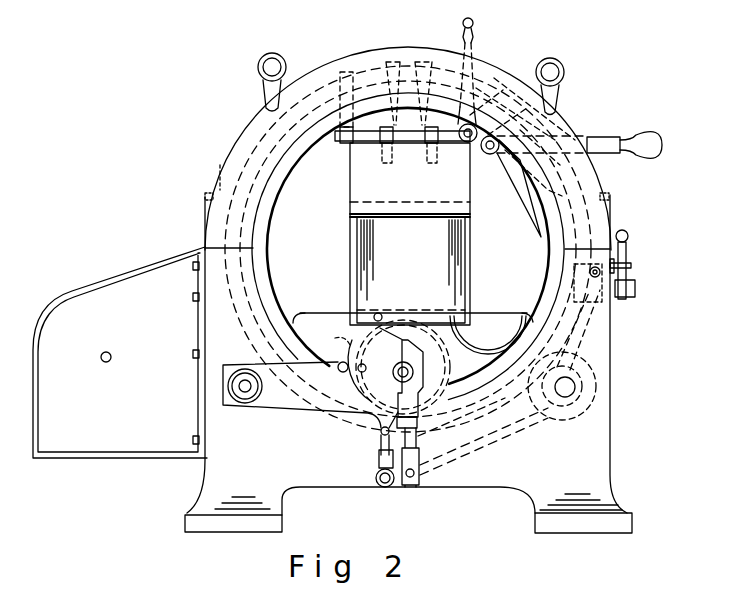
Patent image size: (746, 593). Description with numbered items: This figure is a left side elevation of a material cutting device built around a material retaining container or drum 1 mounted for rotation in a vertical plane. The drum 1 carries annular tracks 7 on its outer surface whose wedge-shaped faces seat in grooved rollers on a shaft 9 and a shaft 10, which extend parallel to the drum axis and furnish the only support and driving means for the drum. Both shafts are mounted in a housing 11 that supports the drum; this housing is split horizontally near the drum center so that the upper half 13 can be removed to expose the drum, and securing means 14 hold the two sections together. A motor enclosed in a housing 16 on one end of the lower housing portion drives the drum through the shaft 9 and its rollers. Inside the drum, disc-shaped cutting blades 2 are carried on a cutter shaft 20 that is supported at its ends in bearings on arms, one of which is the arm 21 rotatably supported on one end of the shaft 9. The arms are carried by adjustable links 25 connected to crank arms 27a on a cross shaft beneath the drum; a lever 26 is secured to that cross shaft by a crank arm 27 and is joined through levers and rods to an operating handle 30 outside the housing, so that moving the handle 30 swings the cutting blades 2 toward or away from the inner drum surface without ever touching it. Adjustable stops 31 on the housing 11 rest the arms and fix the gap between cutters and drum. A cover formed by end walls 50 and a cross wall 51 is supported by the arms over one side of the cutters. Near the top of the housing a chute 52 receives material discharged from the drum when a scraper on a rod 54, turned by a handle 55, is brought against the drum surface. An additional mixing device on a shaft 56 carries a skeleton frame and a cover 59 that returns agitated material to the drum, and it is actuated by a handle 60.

The material retaining container or drum 1 is at (270, 210).
The cutting blades 2 is at (488, 358).
The annular tracks 7 is at (351, 99).
The shaft 9 is at (243, 400).
The shaft 10 is at (572, 387).
The housing 11 is at (408, 364).
The upper half of the housing 13 is at (248, 129).
The securing means 14 is at (205, 196).
The housing 16 is at (90, 290).
The cutter shaft 20 is at (410, 372).
The arm 21 is at (300, 405).
The adjustable links 25 is at (376, 453).
The lever 26 is at (507, 446).
The crank arm 27 is at (408, 488).
The crank arms 27a is at (378, 470).
The operating handle 30 is at (627, 250).
The adjustable stops 31 is at (422, 448).
The end walls 50 is at (325, 309).
The cross wall 51 is at (348, 335).
The chute 52 is at (402, 193).
The rod 54 is at (464, 142).
The handle 55 is at (480, 32).
The shaft 56 is at (490, 155).
The cover 59 is at (532, 222).
The handle 60 is at (635, 133).